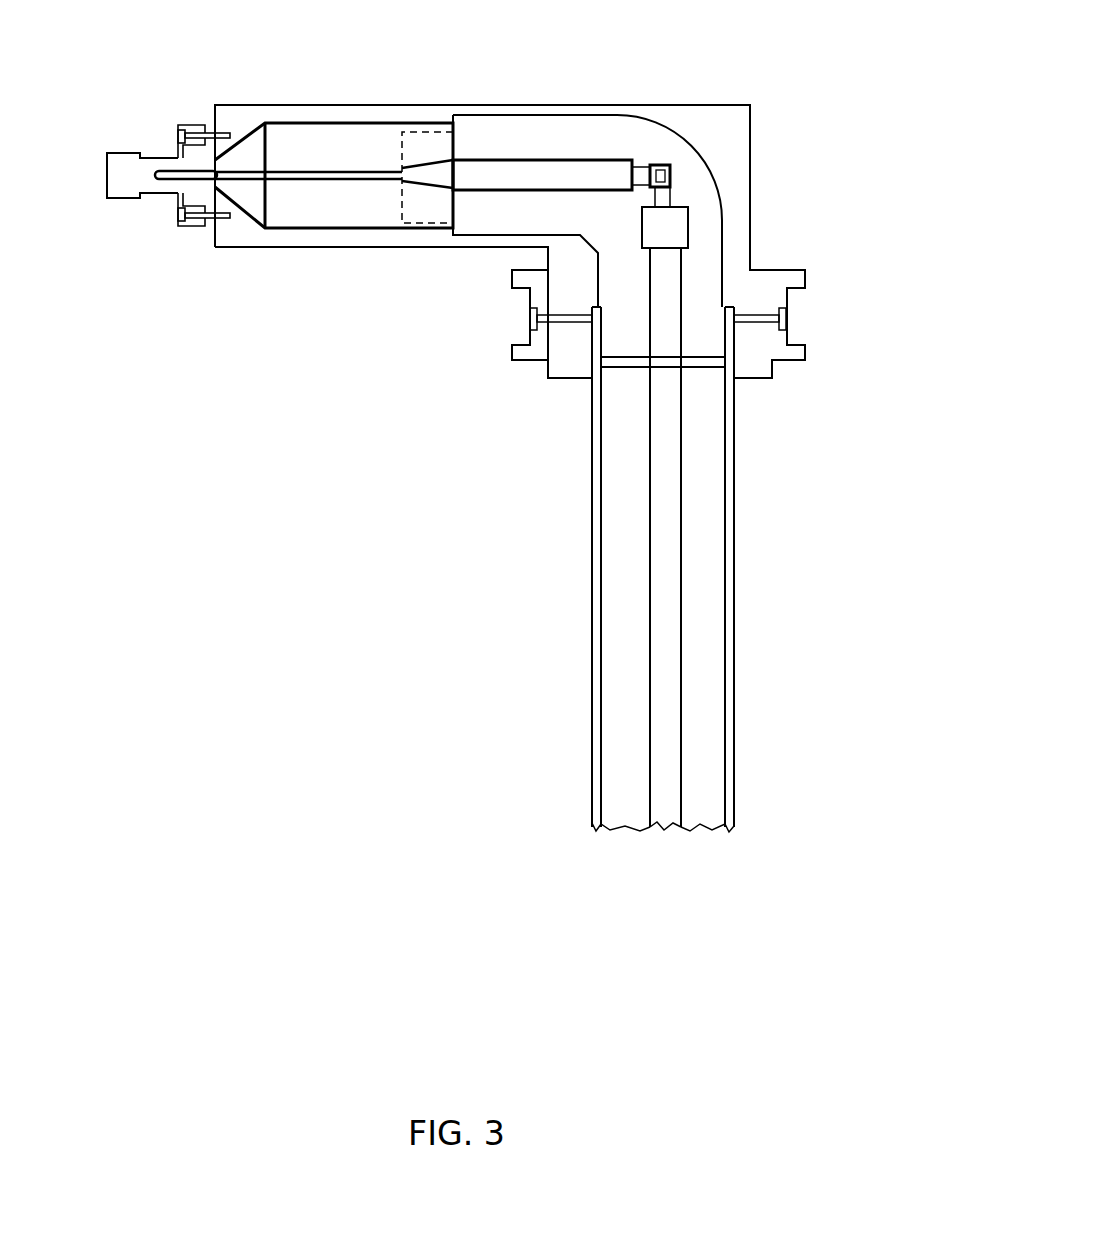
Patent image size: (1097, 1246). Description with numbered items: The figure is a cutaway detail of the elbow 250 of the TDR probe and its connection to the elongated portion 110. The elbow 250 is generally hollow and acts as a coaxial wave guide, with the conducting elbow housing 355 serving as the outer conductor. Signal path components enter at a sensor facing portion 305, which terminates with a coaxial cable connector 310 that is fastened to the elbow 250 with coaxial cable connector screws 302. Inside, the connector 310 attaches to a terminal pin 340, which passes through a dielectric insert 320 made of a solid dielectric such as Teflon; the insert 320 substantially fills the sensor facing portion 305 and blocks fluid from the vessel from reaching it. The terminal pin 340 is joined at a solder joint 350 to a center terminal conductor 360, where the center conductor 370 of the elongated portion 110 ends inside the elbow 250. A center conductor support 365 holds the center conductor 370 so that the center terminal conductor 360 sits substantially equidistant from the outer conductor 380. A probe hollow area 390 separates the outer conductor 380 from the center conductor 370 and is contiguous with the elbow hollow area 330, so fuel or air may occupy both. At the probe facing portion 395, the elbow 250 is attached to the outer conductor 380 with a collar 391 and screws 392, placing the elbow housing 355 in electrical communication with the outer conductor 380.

The elongated portion 110 is at (779, 584).
The elbow 250 is at (785, 67).
The coaxial cable connector screws 302 is at (202, 132).
The sensor facing portion 305 is at (207, 277).
The coaxial cable connector 310 is at (125, 158).
The dielectric insert 320 is at (325, 135).
The elbow hollow area 330 is at (605, 140).
The terminal pin 340 is at (547, 172).
The solder joint 350 is at (663, 175).
The elbow housing 355 is at (742, 142).
The center terminal conductor 360 is at (670, 230).
The center conductor support 365 is at (703, 368).
The center conductor 370 is at (670, 760).
The outer conductor 380 is at (597, 740).
The probe hollow area 390 is at (632, 475).
The collar 391 is at (512, 352).
The screws 392 is at (530, 318).
The probe facing portion 395 is at (554, 404).